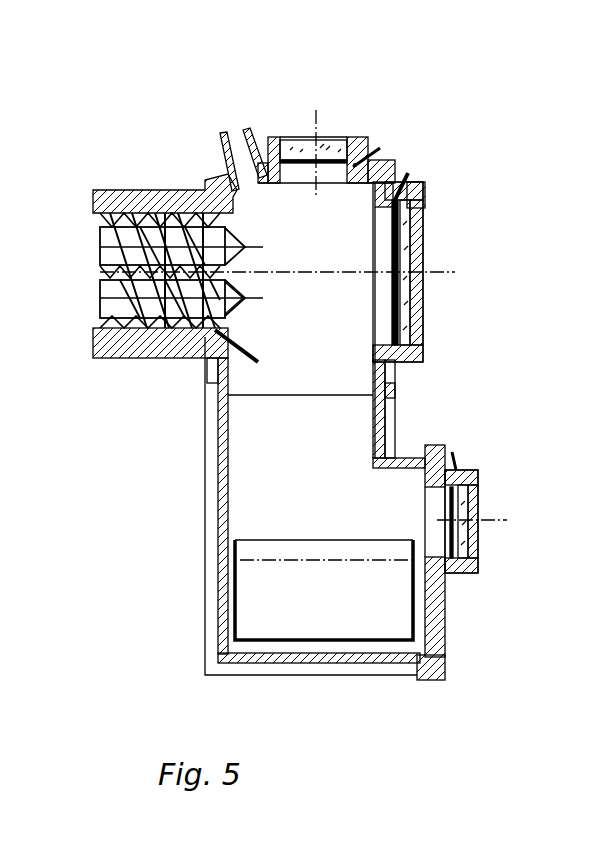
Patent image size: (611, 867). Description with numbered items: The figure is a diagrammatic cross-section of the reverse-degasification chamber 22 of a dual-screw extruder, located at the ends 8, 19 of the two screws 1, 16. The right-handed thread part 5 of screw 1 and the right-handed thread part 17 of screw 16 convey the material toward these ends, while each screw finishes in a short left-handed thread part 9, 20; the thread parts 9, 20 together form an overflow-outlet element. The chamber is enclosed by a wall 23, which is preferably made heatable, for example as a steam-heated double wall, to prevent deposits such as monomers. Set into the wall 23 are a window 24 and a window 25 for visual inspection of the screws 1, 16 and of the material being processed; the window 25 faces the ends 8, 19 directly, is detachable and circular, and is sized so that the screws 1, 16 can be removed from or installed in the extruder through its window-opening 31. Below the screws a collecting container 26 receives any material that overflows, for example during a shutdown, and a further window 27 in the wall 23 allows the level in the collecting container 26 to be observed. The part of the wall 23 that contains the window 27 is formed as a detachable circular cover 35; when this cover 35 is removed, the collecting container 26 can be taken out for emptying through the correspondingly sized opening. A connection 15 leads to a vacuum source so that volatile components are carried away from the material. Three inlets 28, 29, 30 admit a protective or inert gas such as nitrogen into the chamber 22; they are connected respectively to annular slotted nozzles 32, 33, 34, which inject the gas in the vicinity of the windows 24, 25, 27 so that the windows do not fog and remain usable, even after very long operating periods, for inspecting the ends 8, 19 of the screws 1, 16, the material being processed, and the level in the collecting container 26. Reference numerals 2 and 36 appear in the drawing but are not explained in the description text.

The screw 1 is at (112, 238).
The nozzle holder block 2 is at (105, 342).
The thread part of screw 1 5 is at (135, 238).
The end of screw 1 8 is at (232, 297).
The short left-handed thread part 9 is at (198, 280).
The connection 15 is at (236, 135).
The screw 16 is at (115, 304).
The thread part of screw 16 17 is at (150, 293).
The end of screw 16 19 is at (213, 308).
The short left-handed thread part 20 is at (194, 303).
The reverse-degasification chamber 22 is at (400, 362).
The wall 23 is at (397, 170).
The window 24 is at (297, 147).
The window 25 is at (408, 250).
The collecting container 26 is at (253, 585).
The window 27 is at (470, 533).
The inlet 28 is at (375, 150).
The inlet 29 is at (410, 176).
The inlet 30 is at (453, 460).
The window-opening 31 is at (395, 340).
The annular slotted nozzle 32 is at (363, 140).
The annular slotted nozzle 33 is at (423, 195).
The annular slotted nozzle 34 is at (462, 572).
The detachable circular cover 35 is at (447, 452).
The base block 36 is at (447, 668).